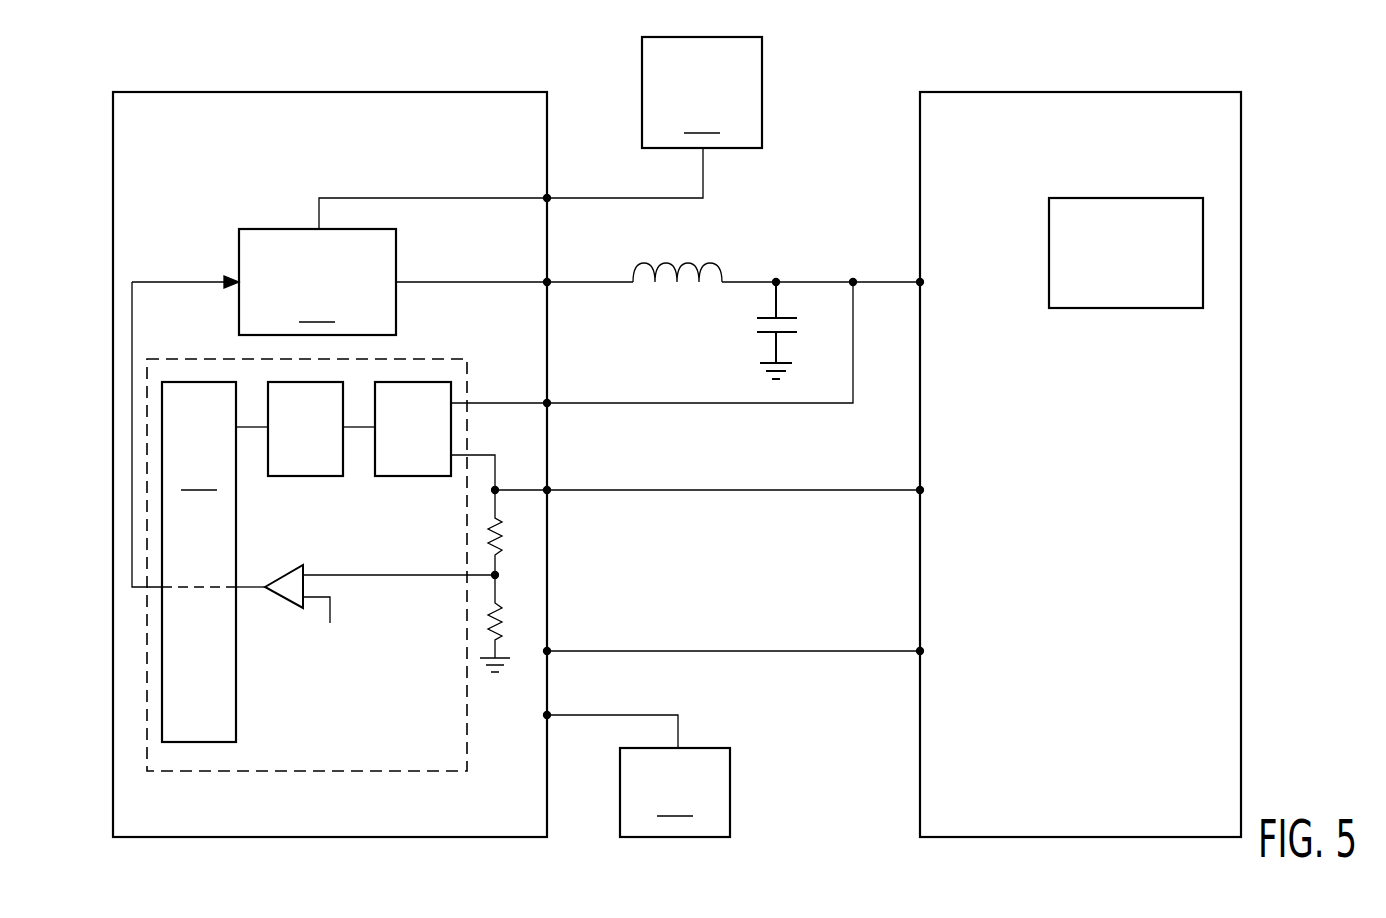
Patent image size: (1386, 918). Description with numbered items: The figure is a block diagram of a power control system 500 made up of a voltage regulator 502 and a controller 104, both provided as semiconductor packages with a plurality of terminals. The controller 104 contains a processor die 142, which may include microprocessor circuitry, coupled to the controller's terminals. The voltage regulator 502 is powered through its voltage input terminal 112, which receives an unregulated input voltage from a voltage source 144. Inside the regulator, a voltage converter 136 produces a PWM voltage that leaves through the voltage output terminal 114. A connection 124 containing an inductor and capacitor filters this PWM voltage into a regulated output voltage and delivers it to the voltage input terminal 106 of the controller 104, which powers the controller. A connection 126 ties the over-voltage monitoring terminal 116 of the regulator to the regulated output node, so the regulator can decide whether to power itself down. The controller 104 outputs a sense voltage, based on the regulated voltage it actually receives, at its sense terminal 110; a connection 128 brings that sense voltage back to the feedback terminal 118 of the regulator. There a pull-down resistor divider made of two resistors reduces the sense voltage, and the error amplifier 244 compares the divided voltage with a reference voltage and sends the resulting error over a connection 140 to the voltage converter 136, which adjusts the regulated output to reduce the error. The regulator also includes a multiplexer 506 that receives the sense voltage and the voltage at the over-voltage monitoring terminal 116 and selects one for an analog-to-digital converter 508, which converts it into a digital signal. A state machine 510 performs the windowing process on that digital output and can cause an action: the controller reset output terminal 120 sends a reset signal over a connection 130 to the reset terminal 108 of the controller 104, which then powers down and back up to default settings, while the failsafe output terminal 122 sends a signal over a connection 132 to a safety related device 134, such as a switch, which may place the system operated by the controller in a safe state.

The power control system 500 is at (803, 85).
The voltage regulator 502 is at (146, 92).
The controller 104 is at (1222, 92).
The processor die 142 is at (1135, 308).
The voltage source 144 is at (654, 117).
The voltage input terminal 112 is at (547, 198).
The voltage converter 136 is at (292, 771).
The connection 140 is at (183, 280).
The voltage output terminal 114 is at (547, 282).
The connection 124 is at (820, 282).
The voltage input terminal 106 is at (923, 287).
The over-voltage monitoring terminal 116 is at (547, 403).
The connection 126 is at (840, 403).
The state machine 510 is at (215, 562).
The analog-to-digital converter 508 is at (303, 476).
The multiplexer 506 is at (398, 476).
The feedback terminal 118 is at (547, 490).
The error amplifier 244 is at (300, 567).
The connection 128 is at (738, 490).
The sense terminal 110 is at (920, 490).
The controller reset output terminal 120 is at (547, 651).
The connection 130 is at (735, 651).
The reset terminal 108 is at (920, 651).
The failsafe output terminal 122 is at (547, 715).
The connection 132 is at (652, 715).
The safety related device 134 is at (675, 792).